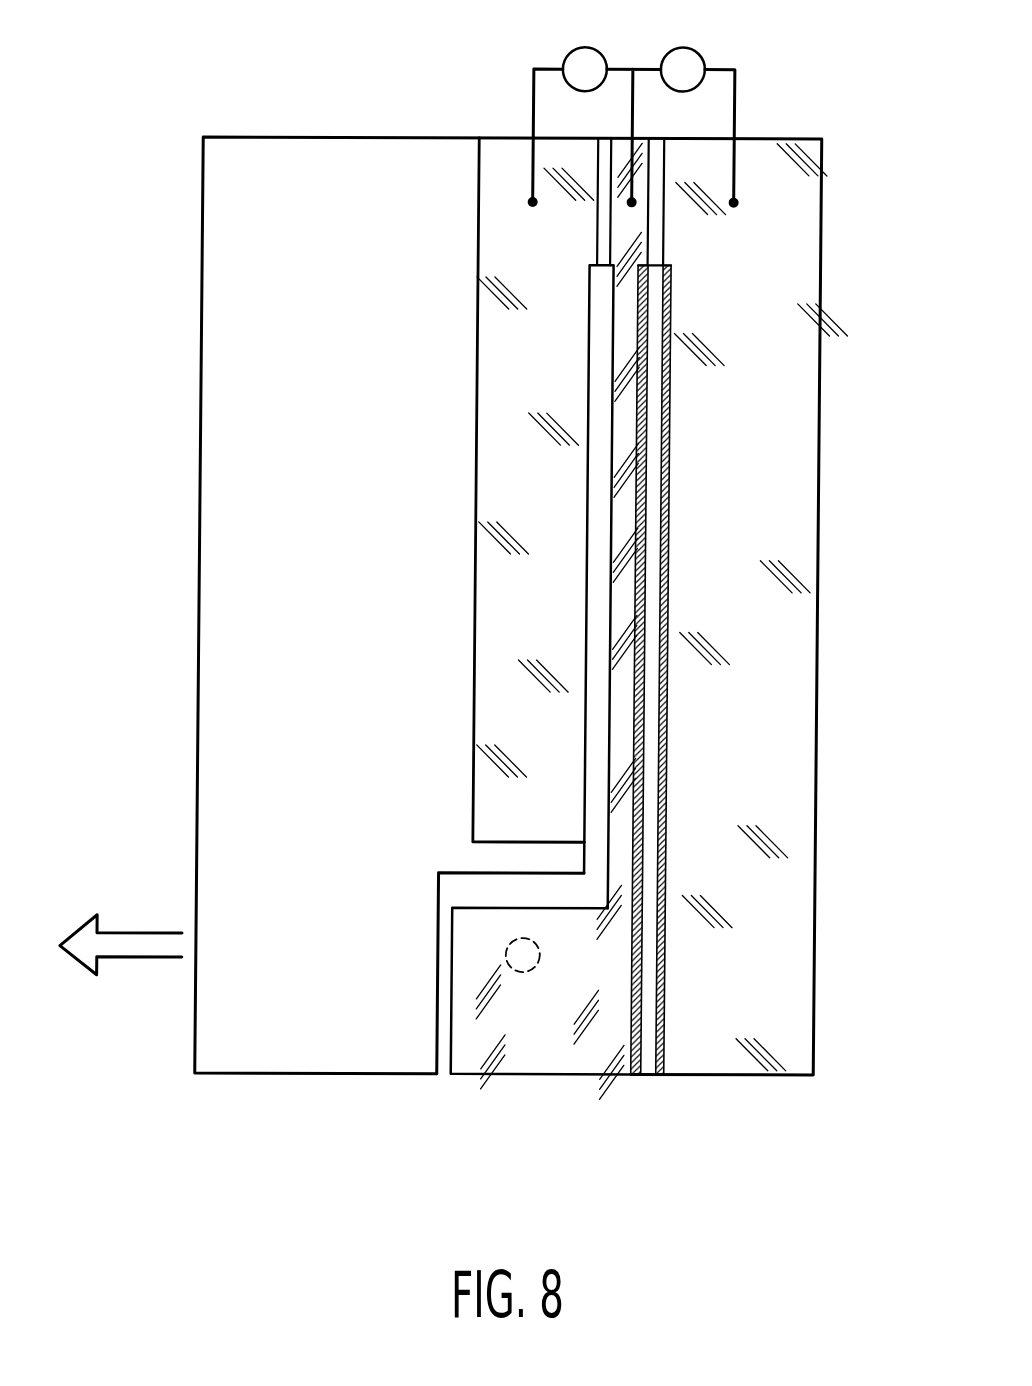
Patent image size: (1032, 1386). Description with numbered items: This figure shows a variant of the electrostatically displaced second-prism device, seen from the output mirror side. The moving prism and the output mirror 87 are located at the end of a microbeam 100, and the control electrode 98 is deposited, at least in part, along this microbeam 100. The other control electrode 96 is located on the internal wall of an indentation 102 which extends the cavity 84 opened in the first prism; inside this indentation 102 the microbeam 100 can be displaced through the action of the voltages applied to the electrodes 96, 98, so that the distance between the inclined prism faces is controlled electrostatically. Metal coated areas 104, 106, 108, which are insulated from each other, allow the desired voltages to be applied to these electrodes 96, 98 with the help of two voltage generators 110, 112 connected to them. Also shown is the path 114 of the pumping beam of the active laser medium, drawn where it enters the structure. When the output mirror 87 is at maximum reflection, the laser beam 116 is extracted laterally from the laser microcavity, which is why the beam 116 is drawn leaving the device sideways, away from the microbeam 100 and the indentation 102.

The cavity 84 is at (652, 1060).
The output mirror 87 is at (491, 1038).
The control electrode 96 is at (667, 308).
The control electrode 98 is at (646, 388).
The microbeam 100 is at (619, 482).
The indentation 102 is at (651, 570).
The metal coated area 104 is at (797, 218).
The metal coated area 106 is at (620, 233).
The metal coated area 108 is at (492, 332).
The voltage generator 110 is at (590, 57).
The voltage generator 112 is at (688, 58).
The path of the pumping beam 114 is at (508, 947).
The laser beam 116 is at (116, 933).